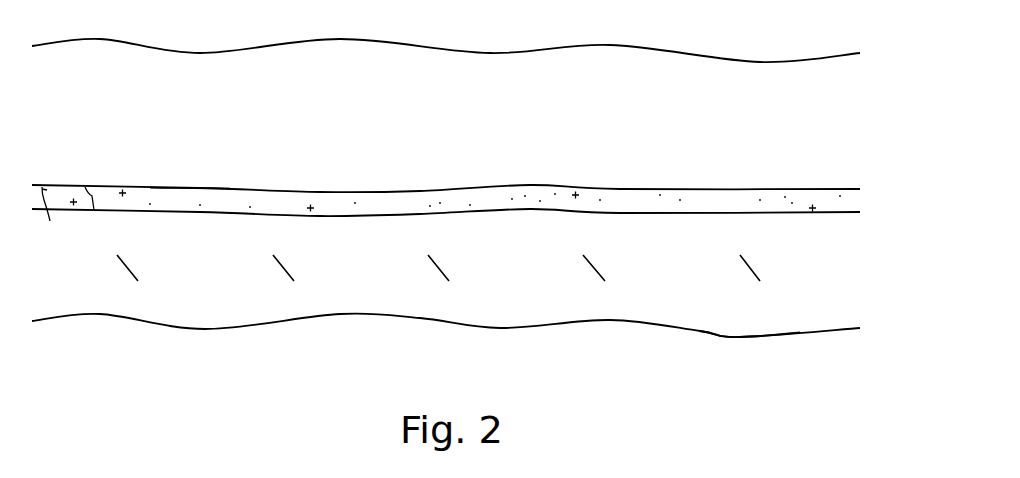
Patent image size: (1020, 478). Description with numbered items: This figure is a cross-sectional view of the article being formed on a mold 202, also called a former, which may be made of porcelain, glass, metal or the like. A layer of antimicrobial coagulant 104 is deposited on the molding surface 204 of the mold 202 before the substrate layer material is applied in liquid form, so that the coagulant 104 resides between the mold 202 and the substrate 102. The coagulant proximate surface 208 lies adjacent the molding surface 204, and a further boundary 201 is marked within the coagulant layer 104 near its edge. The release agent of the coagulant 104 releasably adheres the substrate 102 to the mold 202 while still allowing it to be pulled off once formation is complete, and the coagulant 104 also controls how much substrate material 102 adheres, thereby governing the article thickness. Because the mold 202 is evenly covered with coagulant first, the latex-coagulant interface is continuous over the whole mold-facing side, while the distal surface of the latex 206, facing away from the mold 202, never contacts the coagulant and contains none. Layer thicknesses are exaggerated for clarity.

The mold 202 is at (853, 123).
The antimicrobial coagulant layer 104 is at (852, 201).
The molding surface 204 is at (198, 187).
The boundary line in layer 201 is at (85, 187).
The antimicrobial coagulant proximate surface 208 is at (51, 217).
The substrate layer 102 is at (852, 270).
The distal surface of the latex 206 is at (737, 338).